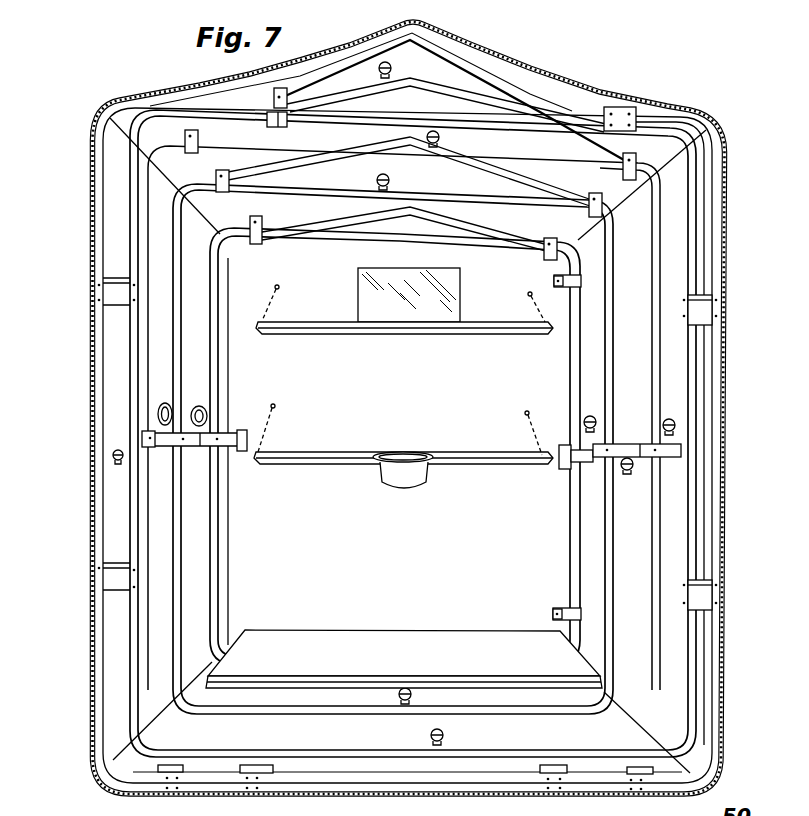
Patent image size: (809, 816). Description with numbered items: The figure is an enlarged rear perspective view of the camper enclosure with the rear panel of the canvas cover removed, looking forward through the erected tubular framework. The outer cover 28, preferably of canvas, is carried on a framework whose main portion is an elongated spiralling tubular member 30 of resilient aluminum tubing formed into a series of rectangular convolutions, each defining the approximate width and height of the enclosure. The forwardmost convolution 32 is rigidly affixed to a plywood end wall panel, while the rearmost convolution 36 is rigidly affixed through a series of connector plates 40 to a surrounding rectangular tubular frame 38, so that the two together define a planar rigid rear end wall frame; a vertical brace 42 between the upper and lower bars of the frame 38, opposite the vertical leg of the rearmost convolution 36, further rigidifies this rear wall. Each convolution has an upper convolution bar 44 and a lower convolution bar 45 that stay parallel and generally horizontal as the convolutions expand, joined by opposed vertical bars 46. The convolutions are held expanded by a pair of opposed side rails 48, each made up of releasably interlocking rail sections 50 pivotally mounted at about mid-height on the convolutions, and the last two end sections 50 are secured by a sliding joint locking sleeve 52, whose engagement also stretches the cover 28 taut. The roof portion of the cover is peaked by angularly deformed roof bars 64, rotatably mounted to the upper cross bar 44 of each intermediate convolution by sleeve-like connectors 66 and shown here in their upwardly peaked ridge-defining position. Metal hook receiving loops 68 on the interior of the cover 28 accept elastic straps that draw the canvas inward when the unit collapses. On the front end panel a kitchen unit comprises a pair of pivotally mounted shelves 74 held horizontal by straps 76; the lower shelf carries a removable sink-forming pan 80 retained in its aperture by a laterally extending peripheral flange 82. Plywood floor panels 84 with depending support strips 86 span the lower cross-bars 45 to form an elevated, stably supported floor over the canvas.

The outer cover 28 is at (91, 668).
The spiralling tubular member 30 is at (222, 586).
The forwardmost convolution 32 is at (570, 555).
The rearmost convolution 36 is at (128, 540).
The rectangular tubular frame 38 is at (97, 519).
The connector plates 40 is at (119, 578).
The vertical brace 42 is at (683, 506).
The upper convolution bar 44 is at (397, 150).
The lower convolution bar 45 is at (362, 714).
The vertical bars 46 is at (183, 326).
The side rails 48 is at (185, 431).
The rail sections 50 is at (190, 449).
The sliding joint locking sleeve 52 is at (578, 468).
The roof bars 64 is at (494, 74).
The sleeve-like connector 66 is at (274, 120).
The hook receiving loops 68 is at (594, 418).
The shelves 74 is at (506, 334).
The straps 76 is at (284, 416).
The sink-forming pan 80 is at (405, 478).
The peripheral flange 82 is at (430, 452).
The floor panels 84 is at (278, 638).
The support strips 86 is at (303, 689).